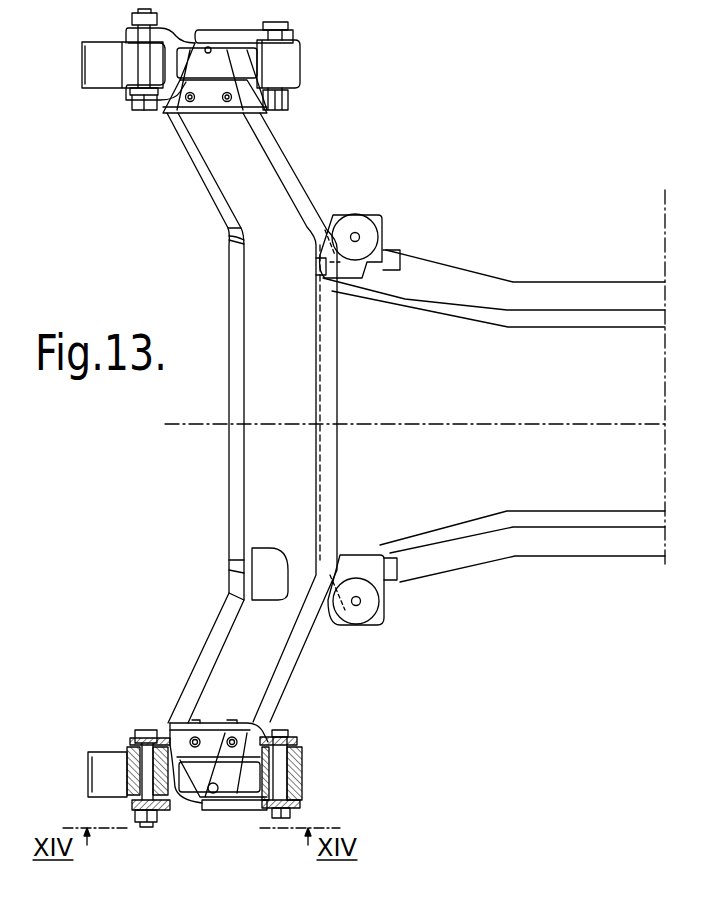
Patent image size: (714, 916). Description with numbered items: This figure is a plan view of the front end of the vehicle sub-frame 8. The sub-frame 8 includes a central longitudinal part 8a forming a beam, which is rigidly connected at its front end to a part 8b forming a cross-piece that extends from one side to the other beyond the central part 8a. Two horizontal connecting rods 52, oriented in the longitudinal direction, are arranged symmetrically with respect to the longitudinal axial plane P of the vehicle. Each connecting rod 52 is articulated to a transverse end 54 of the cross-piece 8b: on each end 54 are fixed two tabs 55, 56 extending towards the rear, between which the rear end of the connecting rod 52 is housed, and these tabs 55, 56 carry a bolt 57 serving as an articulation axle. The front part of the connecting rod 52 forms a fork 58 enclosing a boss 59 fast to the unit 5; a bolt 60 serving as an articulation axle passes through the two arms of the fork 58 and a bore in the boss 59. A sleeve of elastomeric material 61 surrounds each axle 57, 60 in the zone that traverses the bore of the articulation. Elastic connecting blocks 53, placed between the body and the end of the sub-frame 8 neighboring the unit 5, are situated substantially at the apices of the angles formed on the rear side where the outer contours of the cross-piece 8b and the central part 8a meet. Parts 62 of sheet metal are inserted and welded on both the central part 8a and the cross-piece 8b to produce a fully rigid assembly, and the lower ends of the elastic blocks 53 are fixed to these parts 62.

The unit 5 is at (98, 747).
The sub-frame 8 is at (470, 257).
The central longitudinal part 8a is at (600, 292).
The cross-piece part 8b is at (270, 286).
The connecting rod 52 is at (210, 80).
The elastic connecting block 53 is at (357, 228).
The transverse end 54 is at (238, 120).
The tab 55 is at (255, 733).
The tab 56 is at (243, 805).
The bolt 57 is at (285, 762).
The fork 58 is at (136, 738).
The boss 59 is at (105, 765).
The bolt 60 is at (130, 793).
The sleeve of elastomeric material 61 is at (130, 780).
The sheet metal part 62 is at (382, 620).
The longitudinal axial plane P is at (190, 427).